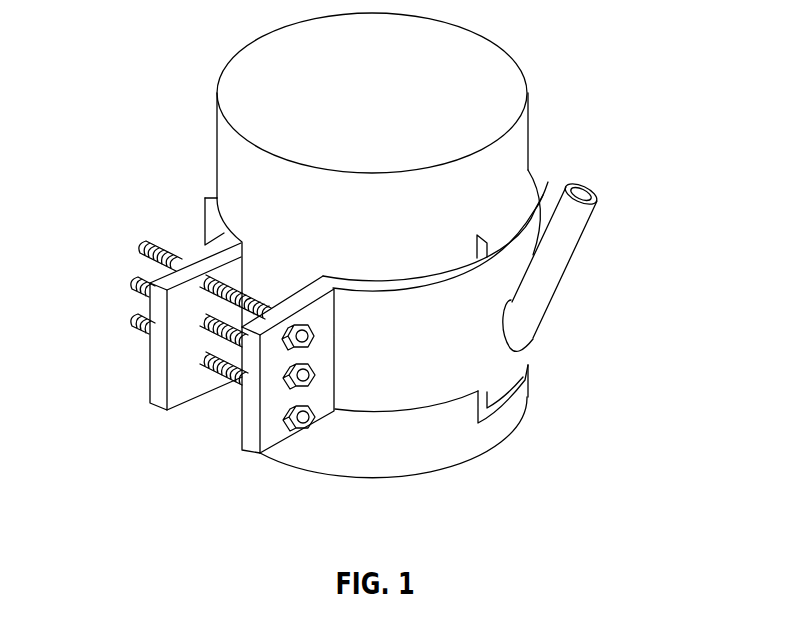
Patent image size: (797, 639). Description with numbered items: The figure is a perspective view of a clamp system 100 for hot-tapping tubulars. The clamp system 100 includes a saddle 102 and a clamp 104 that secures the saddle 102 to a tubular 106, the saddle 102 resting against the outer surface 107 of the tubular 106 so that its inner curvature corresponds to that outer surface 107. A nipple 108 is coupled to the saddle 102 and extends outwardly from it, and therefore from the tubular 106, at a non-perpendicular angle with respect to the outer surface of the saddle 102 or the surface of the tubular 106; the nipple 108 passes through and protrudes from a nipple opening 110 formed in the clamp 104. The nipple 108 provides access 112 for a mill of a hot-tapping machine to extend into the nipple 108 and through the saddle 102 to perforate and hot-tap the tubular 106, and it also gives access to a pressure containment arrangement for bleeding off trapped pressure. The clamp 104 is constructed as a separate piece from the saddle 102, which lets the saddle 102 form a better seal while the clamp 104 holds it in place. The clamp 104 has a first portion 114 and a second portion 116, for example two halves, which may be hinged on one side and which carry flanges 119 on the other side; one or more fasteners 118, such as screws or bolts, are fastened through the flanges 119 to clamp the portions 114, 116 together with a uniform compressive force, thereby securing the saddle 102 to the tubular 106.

The clamp system 100 is at (665, 82).
The saddle 102 is at (549, 190).
The clamp 104 is at (473, 352).
The tubular 106 is at (339, 237).
The outer surface 107 is at (231, 153).
The nipple 108 is at (561, 256).
The nipple opening 110 is at (535, 330).
The access 112 is at (588, 184).
The first portion 114 is at (394, 383).
The second portion 116 is at (206, 197).
The fasteners 118 is at (125, 327).
The flanges 119 is at (151, 390).